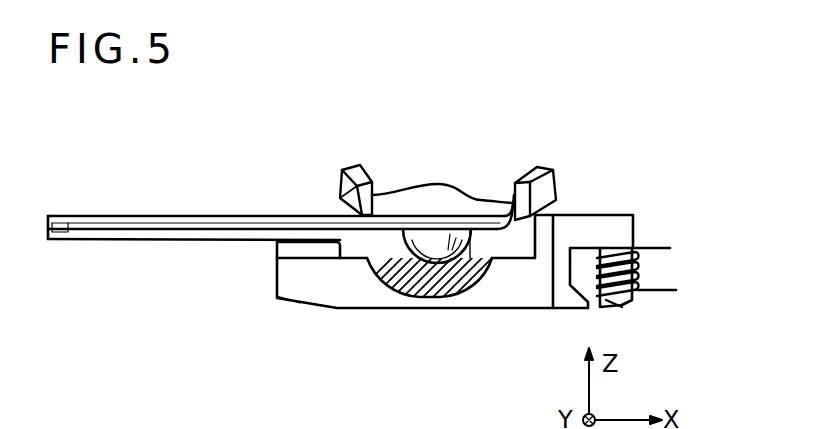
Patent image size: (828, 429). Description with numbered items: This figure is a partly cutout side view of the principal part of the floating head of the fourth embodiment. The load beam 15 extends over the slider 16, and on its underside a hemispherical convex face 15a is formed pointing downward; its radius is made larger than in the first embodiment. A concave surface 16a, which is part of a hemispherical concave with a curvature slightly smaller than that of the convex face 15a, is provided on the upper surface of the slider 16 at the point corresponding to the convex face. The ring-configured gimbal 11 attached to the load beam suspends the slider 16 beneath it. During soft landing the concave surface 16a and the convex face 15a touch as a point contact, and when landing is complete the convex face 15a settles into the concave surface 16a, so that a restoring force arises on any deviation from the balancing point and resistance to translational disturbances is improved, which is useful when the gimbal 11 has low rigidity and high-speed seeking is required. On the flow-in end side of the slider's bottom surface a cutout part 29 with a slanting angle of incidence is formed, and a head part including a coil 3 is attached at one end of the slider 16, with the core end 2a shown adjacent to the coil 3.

The gimbal 11 is at (150, 238).
The load beam 15 is at (410, 200).
The hemispherical convex face 15a is at (441, 236).
The slider 16 is at (335, 294).
The concave surface 16a is at (423, 299).
The cutout part 29 is at (290, 304).
The coil 3 is at (623, 246).
The core end 2a is at (622, 303).